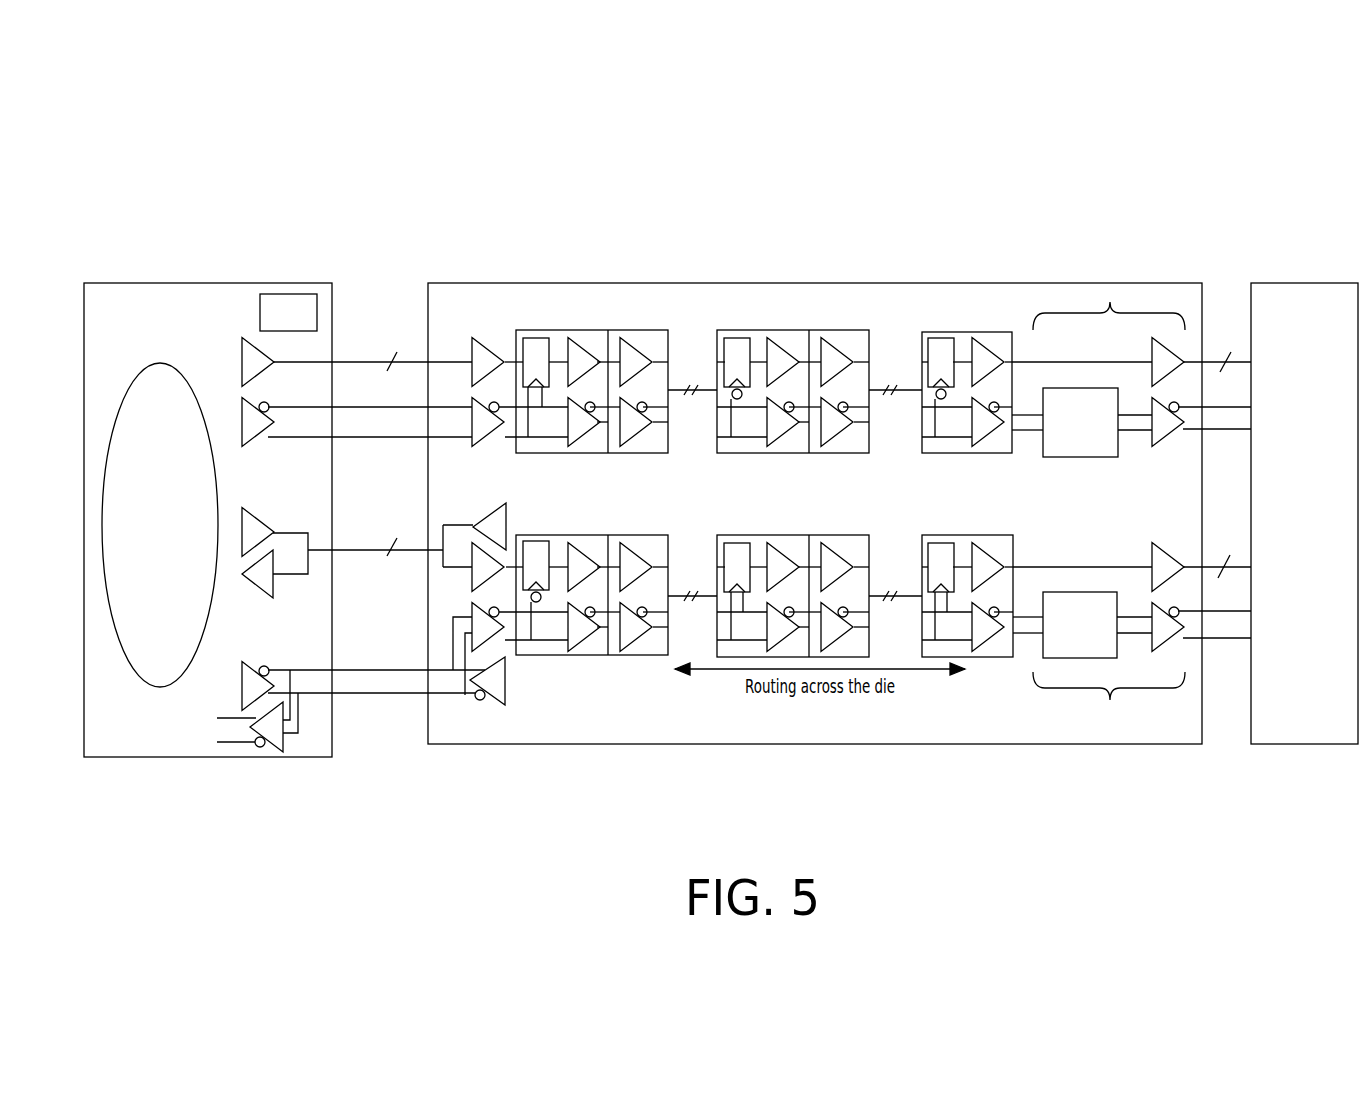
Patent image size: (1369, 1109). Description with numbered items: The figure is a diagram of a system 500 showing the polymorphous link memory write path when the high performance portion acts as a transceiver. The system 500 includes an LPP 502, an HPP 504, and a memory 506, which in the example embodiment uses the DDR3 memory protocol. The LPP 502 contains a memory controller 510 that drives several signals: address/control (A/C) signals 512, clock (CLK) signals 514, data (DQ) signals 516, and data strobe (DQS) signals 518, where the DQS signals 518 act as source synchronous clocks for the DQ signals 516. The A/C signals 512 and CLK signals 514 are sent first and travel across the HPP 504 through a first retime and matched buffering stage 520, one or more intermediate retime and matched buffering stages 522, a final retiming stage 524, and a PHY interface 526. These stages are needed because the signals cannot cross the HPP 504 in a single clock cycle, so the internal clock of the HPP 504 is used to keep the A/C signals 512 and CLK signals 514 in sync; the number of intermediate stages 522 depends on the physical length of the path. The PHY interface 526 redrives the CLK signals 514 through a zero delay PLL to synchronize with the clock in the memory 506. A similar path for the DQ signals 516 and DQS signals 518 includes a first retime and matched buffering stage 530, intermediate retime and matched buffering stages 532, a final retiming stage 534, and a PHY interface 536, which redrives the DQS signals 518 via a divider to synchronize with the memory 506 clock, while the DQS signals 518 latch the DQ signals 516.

The system 500 is at (148, 158).
The LPP 502 is at (200, 283).
The HPP 504 is at (690, 283).
The memory 506 is at (1318, 744).
The memory controller 510 is at (118, 410).
The address/control (A/C) signals 512 is at (378, 333).
The clock (CLK) signals 514 is at (385, 437).
The data (DQ) signals 516 is at (367, 551).
The data strobe (DQS) signals 518 is at (387, 695).
The first retime and matched buffering stage 520 is at (555, 330).
The intermediate retime and matched buffering stages 522 is at (838, 330).
The final retiming stage 524 is at (962, 332).
The PHY interface 526 is at (1110, 302).
The first retime and matched buffering stage 530 is at (556, 655).
The intermediate retime and matched buffering stages 532 is at (869, 644).
The final retiming stage 534 is at (1000, 657).
The PHY interface 536 is at (1110, 700).